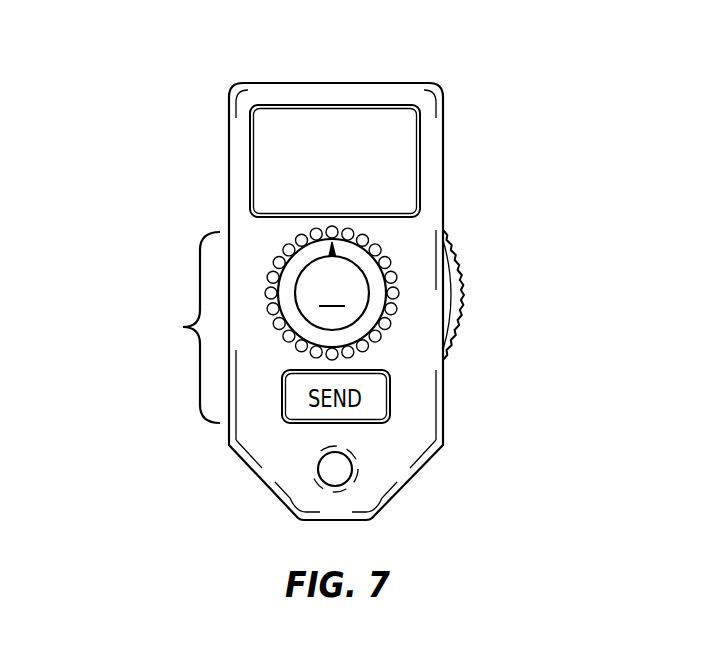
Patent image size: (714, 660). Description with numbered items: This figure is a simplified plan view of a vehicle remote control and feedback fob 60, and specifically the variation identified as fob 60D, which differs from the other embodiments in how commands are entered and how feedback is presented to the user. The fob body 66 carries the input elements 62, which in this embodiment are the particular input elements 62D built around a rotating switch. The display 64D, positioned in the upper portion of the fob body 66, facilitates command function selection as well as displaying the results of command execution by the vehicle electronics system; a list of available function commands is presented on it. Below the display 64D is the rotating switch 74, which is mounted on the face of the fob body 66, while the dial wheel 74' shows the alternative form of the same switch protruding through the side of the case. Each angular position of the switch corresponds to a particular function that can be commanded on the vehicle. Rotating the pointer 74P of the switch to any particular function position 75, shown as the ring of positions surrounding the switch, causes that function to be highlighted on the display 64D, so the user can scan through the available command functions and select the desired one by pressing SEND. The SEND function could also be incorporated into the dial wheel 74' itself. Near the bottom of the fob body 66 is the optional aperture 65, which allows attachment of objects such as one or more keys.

The fob 60 is at (504, 393).
The fob 60D is at (504, 177).
The actuators 62 is at (128, 299).
The input elements 62D is at (183, 327).
The display 64D is at (250, 137).
The aperture 65 is at (353, 468).
The fob body 66 is at (340, 82).
The rotating switch 74 is at (332, 293).
The rotating pointer 74P is at (337, 255).
The dial wheel 74' is at (504, 295).
The function position 75 is at (400, 294).